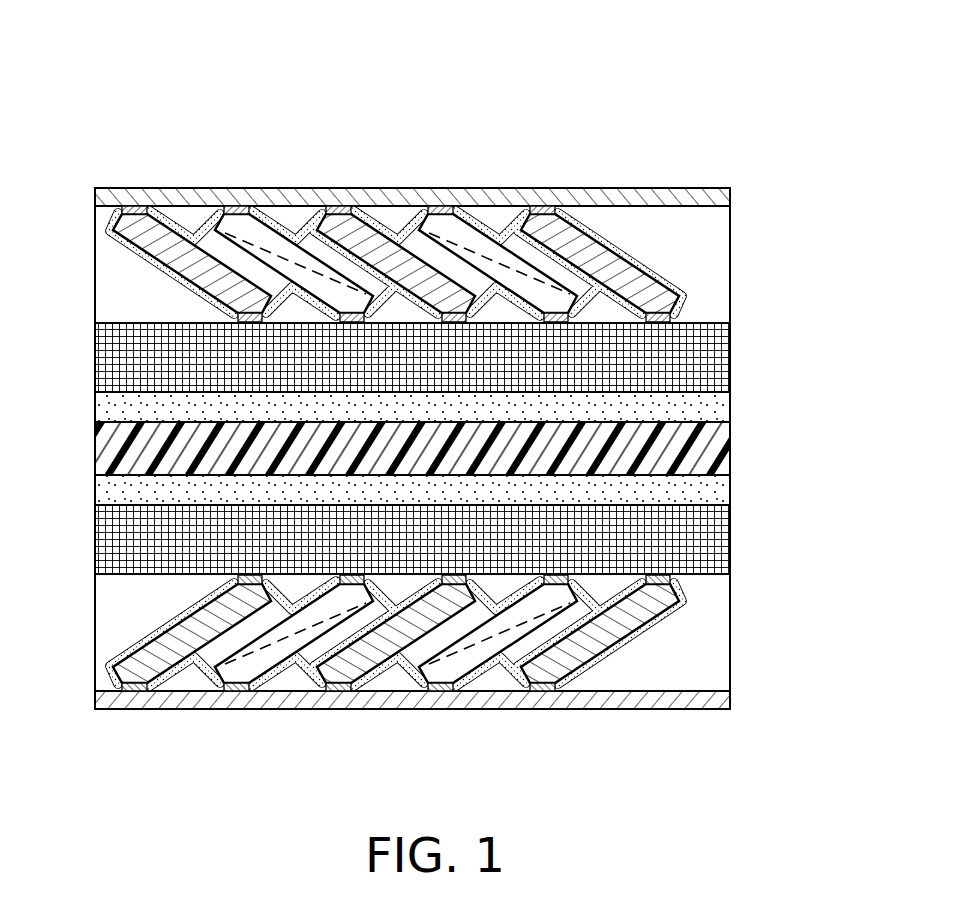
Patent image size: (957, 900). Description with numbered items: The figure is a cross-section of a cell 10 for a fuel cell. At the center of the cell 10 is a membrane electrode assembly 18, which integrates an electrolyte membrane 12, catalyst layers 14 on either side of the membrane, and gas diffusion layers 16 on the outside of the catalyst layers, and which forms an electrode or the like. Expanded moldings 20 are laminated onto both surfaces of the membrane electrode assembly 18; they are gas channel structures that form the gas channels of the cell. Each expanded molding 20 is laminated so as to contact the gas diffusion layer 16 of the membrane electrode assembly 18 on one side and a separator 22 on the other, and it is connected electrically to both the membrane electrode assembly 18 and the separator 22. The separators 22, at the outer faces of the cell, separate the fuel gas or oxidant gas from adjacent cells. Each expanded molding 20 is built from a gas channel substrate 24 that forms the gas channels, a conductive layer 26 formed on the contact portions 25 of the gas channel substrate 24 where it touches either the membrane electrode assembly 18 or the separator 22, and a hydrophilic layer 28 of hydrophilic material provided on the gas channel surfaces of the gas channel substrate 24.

The cell for a fuel cell 10 is at (118, 112).
The electrolyte membrane 12 is at (714, 449).
The catalyst layer 14 is at (714, 407).
The gas diffusion layer 16 is at (716, 358).
The membrane electrode assembly 18 is at (803, 333).
The expanded molding 20 is at (803, 208).
The separator 22 is at (730, 198).
The gas channel substrate 24 is at (620, 268).
The contact portion 25 is at (574, 218).
The conductive layer 26 is at (545, 207).
The hydrophilic layer 28 is at (612, 246).